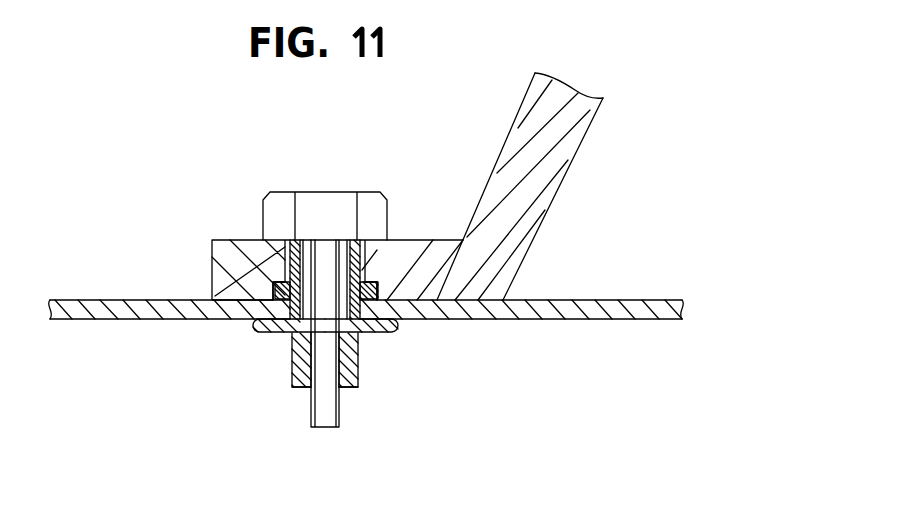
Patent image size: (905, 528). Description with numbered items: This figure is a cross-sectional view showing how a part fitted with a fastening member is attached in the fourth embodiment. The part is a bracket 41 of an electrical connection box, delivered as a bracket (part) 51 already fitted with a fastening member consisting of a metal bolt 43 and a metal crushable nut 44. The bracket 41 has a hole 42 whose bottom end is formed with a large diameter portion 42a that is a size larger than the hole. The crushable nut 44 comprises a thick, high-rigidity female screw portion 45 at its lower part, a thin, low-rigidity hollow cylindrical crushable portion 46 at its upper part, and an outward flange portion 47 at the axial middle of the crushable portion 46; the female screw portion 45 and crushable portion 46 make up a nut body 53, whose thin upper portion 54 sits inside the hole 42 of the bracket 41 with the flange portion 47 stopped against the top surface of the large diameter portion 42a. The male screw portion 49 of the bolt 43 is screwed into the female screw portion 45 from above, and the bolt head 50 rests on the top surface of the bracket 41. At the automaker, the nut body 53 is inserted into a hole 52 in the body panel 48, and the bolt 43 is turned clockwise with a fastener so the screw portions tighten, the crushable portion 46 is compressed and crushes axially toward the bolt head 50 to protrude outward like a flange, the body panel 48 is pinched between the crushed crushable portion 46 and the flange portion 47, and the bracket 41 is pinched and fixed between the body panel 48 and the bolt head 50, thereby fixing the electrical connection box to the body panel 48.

The bracket 41 is at (497, 170).
The hole 42 is at (287, 263).
The large diameter portion 42a is at (280, 294).
The bolt 43 is at (361, 190).
The crushable nut 44 is at (291, 388).
The female screw portion 45 is at (292, 359).
The crushable portion 46 is at (253, 330).
The flange portion 47 is at (275, 268).
The body panel 48 is at (655, 298).
The male screw portion 49 is at (345, 410).
The bolt head 50 is at (387, 213).
The bracket (part) fitted with a fastening member 51 is at (418, 137).
The hole in the body panel 52 is at (434, 324).
The nut body 53 is at (360, 360).
The thin upper portion 54 is at (297, 277).